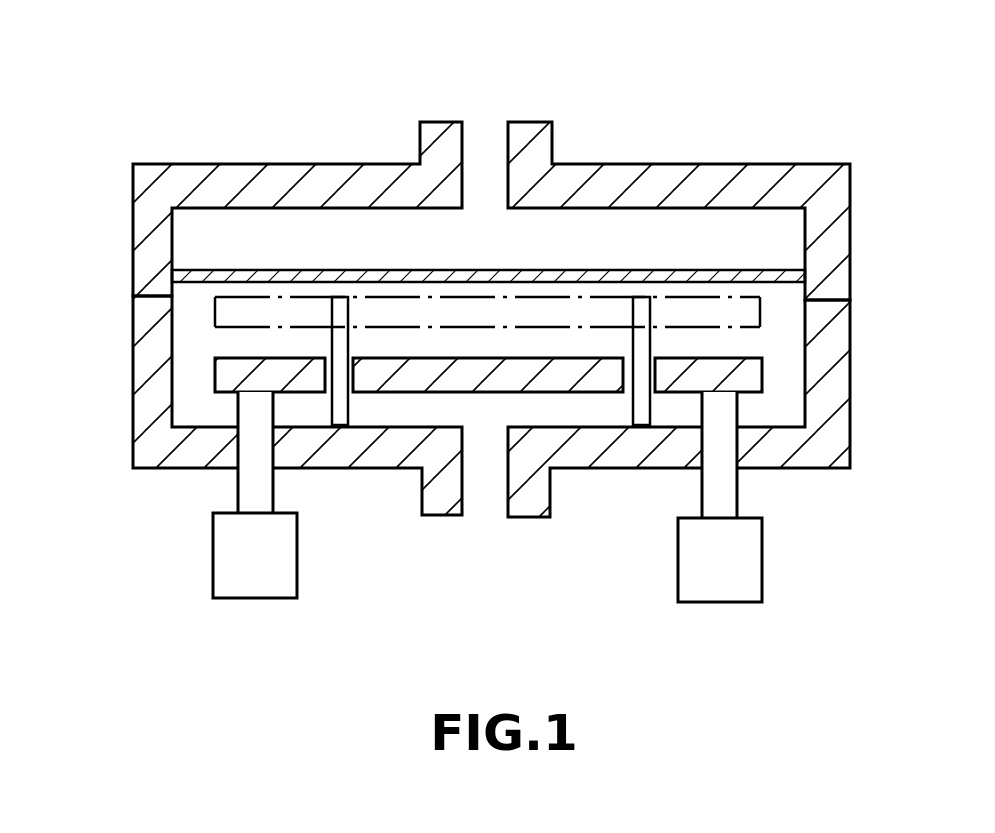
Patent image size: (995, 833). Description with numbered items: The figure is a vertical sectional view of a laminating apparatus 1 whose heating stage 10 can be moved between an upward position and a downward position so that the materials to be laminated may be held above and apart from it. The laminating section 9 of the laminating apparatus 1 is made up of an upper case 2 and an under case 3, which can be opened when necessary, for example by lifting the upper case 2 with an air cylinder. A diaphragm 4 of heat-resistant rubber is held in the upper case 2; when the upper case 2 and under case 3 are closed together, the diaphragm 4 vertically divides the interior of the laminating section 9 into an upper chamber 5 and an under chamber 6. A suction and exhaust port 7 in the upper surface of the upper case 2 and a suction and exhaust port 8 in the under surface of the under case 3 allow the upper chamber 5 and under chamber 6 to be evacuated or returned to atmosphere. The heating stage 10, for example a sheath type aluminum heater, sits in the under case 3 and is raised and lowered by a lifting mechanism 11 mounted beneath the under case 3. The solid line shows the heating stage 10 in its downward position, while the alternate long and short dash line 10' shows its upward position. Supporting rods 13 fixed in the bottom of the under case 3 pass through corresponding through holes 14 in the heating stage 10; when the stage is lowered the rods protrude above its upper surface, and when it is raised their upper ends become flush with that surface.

The laminating apparatus 1 is at (485, 111).
The upper case 2 is at (667, 166).
The under case 3 is at (832, 455).
The diaphragm 4 is at (752, 273).
The upper chamber 5 is at (743, 222).
The under chamber 6 is at (788, 413).
The suction and exhaust port 7 is at (499, 133).
The suction and exhaust port 8 is at (507, 486).
The laminating section 9 is at (130, 253).
The heating stage 10 is at (488, 440).
The heating stage in upward position 10' is at (407, 325).
The lifting mechanism 11 is at (268, 600).
The supporting rods 13 is at (342, 407).
The through holes 14 is at (328, 356).